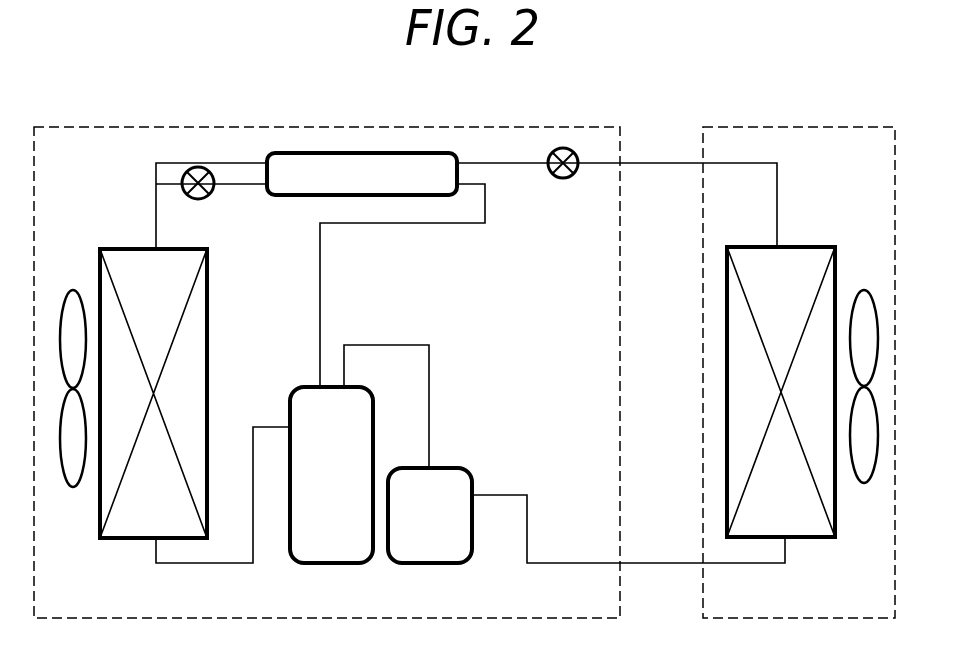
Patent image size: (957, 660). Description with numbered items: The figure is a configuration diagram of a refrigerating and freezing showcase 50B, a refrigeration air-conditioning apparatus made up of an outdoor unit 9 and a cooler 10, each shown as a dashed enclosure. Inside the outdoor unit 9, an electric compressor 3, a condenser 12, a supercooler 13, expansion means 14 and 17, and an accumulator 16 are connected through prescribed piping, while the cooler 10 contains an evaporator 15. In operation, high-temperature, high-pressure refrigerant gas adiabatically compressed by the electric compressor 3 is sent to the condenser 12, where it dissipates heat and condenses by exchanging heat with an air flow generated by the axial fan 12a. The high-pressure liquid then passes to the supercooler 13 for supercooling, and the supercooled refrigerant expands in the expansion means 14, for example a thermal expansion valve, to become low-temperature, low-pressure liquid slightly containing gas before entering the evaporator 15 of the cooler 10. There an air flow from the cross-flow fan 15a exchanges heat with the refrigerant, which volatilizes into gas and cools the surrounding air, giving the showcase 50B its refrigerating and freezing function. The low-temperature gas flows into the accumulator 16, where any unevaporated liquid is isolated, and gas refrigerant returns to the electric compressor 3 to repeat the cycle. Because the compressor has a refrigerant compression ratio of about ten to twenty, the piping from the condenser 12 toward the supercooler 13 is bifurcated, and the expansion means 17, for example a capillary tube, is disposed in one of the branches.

The refrigerating and freezing showcase 50B is at (593, 92).
The outdoor unit 9 is at (345, 127).
The cooler 10 is at (797, 127).
The electric compressor 3 is at (308, 400).
The condenser 12 is at (128, 248).
The axial fan 12a is at (73, 290).
The supercooler 13 is at (282, 197).
The expansion means 14 is at (563, 179).
The evaporator 15 is at (812, 246).
The cross-flow fan 15a is at (864, 290).
The accumulator 16 is at (447, 485).
The expansion means 17 is at (198, 199).